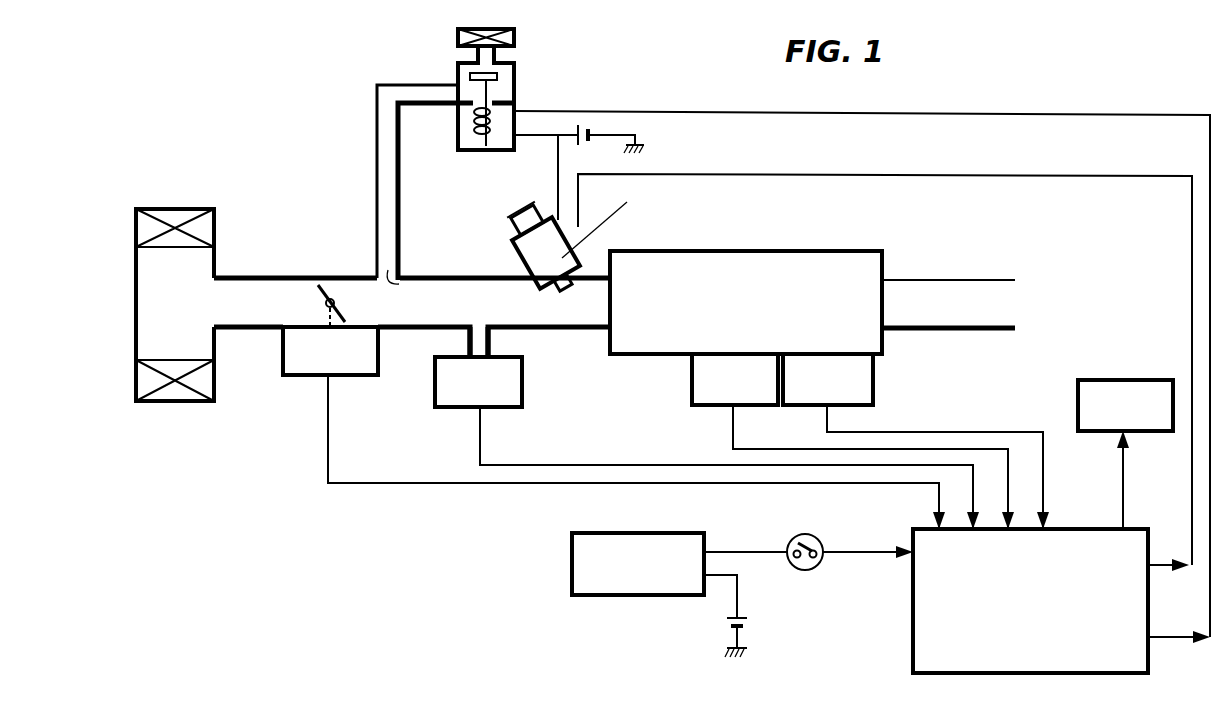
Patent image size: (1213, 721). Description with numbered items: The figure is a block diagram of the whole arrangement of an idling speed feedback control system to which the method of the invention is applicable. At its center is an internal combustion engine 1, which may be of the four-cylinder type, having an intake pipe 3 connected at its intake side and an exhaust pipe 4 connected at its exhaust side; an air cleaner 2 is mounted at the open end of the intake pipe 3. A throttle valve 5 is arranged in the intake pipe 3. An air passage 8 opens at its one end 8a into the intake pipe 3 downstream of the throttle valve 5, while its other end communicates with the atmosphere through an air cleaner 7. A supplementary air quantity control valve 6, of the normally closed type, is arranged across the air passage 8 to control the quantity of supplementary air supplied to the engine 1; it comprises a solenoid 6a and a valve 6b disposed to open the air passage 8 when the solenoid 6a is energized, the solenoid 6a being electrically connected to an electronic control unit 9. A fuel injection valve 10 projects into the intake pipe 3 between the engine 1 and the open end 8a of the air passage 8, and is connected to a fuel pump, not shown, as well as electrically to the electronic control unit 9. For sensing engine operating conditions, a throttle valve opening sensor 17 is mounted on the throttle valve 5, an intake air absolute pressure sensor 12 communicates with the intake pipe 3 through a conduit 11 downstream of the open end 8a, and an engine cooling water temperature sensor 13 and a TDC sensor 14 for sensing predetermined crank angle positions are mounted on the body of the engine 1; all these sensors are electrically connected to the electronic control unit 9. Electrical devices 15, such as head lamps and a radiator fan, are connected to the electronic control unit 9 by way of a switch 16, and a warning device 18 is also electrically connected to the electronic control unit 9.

The internal combustion engine 1 is at (884, 262).
The air cleaner 2 is at (173, 402).
The intake pipe 3 is at (250, 322).
The exhaust pipe 4 is at (958, 320).
The throttle valve 5 is at (326, 288).
The supplementary air quantity control valve 6 is at (532, 86).
The solenoid 6a is at (473, 138).
The valve 6b is at (470, 75).
The air cleaner 7 is at (514, 38).
The air passage 8 is at (377, 145).
The open end of the air passage 8a is at (403, 283).
The electronic control unit 9 is at (912, 605).
The fuel injection valve 10 is at (512, 252).
The conduit 11 is at (483, 344).
The intake air absolute pressure (PBA) sensor 12 is at (522, 385).
The engine cooling water (TW) temperature sensor 13 is at (690, 392).
The TDC sensor 14 is at (873, 392).
The electrical devices 15 is at (608, 597).
The switch 16 is at (807, 570).
The throttle valve opening (θth) sensor 17 is at (367, 377).
The warning device 18 is at (1100, 380).